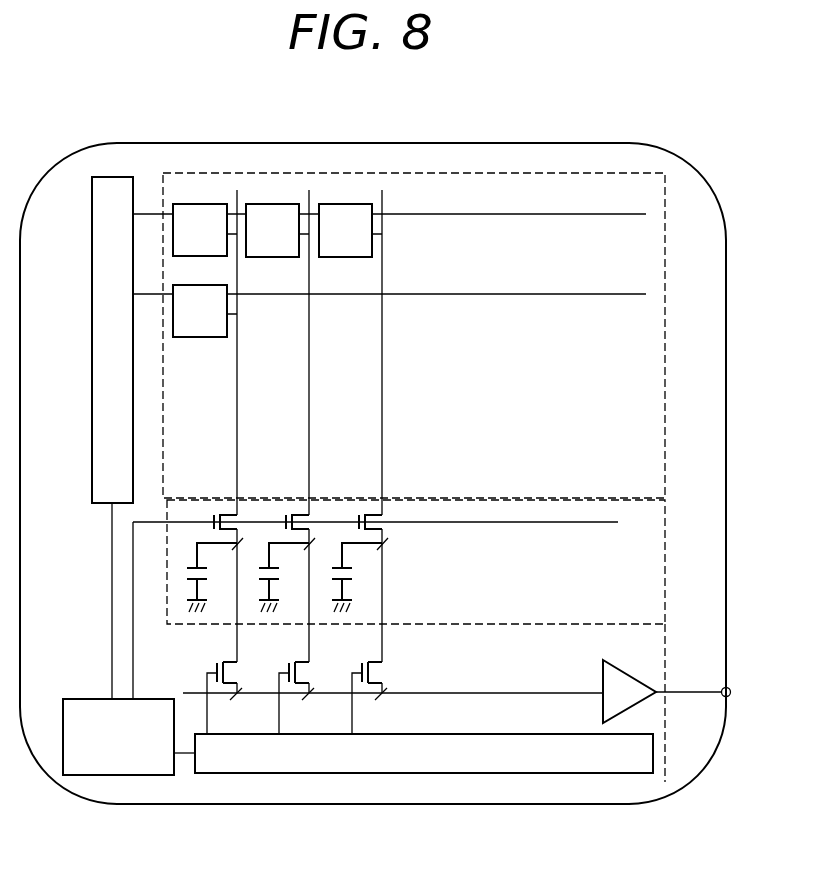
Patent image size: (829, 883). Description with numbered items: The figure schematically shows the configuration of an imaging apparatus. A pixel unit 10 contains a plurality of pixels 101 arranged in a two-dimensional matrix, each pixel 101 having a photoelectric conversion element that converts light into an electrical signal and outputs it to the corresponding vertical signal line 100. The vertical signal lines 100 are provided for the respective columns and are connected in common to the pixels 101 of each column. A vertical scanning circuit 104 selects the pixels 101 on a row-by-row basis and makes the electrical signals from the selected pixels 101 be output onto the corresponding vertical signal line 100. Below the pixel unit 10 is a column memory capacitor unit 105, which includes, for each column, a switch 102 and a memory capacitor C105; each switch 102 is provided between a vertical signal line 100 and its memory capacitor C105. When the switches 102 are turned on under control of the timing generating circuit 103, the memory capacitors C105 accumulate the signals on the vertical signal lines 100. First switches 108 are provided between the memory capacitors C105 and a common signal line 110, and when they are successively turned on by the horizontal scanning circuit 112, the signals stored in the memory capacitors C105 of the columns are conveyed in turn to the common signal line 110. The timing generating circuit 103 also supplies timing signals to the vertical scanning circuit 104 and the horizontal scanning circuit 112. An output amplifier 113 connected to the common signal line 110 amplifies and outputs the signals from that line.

The pixel unit 10 is at (640, 367).
The vertical signal line 100 is at (382, 190).
The pixel 101 is at (197, 204).
The switch 102 is at (361, 514).
The timing generating circuit 103 is at (87, 698).
The vertical scanning circuit 104 is at (92, 347).
The column memory capacitor unit 105 is at (665, 521).
The memory capacitor C105 is at (352, 577).
The first switch 108 is at (383, 670).
The common signal line 110 is at (494, 690).
The horizontal scanning circuit 112 is at (422, 732).
The output amplifier 113 is at (603, 682).